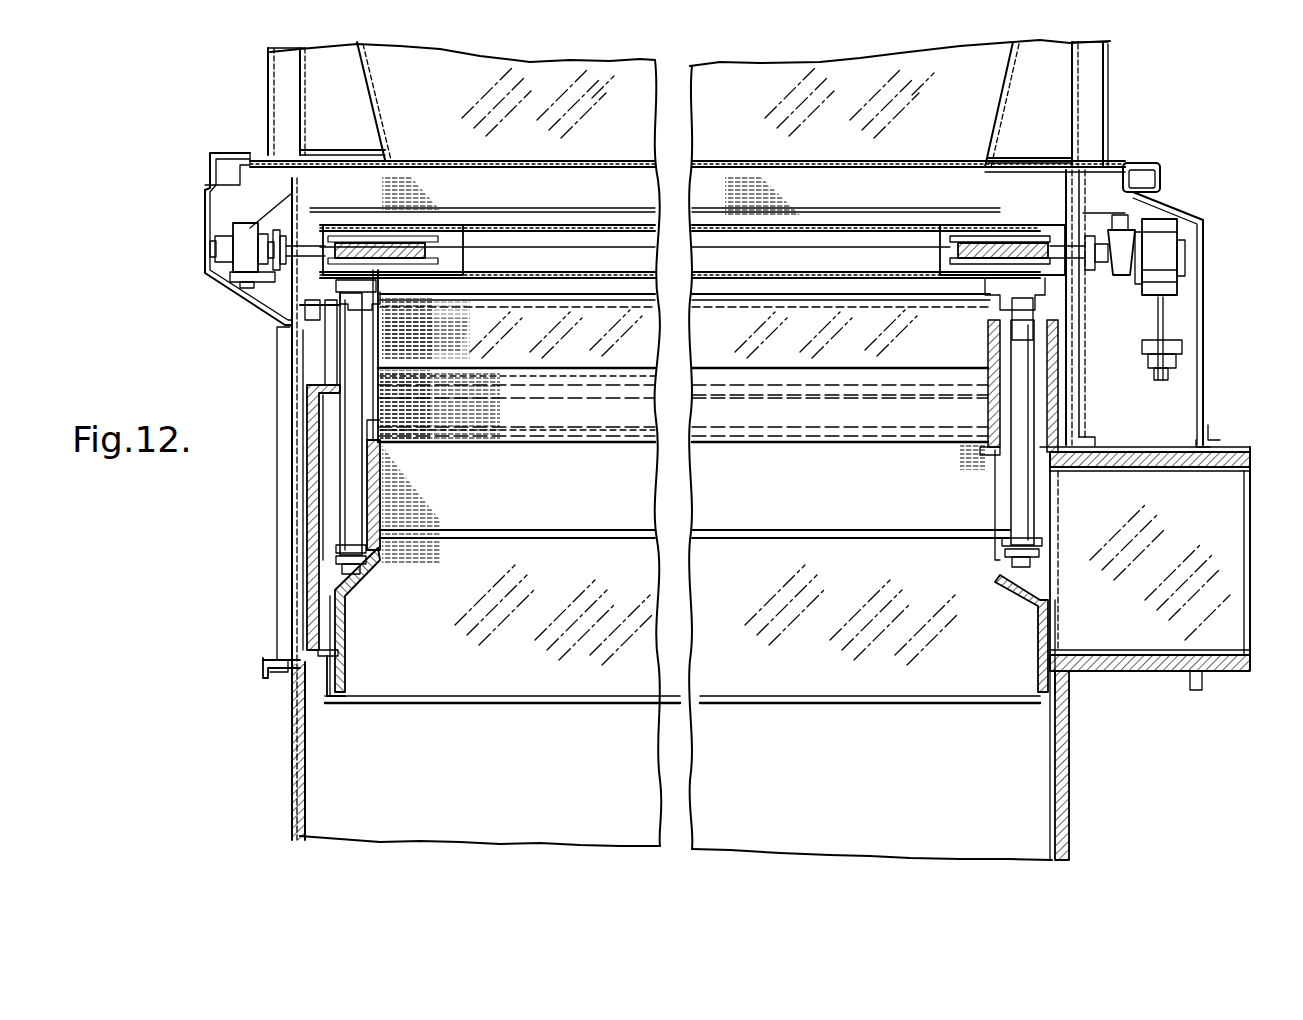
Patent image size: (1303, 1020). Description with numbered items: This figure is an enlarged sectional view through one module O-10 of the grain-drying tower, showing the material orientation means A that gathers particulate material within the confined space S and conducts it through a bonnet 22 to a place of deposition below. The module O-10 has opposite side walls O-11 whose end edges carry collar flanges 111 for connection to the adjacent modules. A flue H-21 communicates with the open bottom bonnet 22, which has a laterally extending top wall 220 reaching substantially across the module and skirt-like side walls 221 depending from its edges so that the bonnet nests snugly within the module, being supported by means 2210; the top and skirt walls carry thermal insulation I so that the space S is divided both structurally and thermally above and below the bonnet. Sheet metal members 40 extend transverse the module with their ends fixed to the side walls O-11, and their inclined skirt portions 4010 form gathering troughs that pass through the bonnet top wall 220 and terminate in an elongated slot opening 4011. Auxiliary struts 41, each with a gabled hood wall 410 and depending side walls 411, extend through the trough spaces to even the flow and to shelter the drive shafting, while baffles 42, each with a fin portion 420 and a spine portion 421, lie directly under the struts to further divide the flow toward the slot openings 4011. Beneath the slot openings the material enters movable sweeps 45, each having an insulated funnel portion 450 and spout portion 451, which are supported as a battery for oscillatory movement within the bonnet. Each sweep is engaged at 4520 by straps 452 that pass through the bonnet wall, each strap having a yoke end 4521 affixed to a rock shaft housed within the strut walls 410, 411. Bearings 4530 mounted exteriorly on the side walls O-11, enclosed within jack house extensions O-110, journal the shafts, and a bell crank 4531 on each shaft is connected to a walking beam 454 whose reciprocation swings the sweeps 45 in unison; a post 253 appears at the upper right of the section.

The assembly A is at (200, 148).
The confined space S is at (362, 797).
The thermal insulation I is at (318, 590).
The module O-10 is at (262, 468).
The module side walls O-11 is at (300, 628).
The jack house extensions O-110 is at (204, 205).
The flue H-21 is at (1125, 622).
The bonnet 22 is at (332, 415).
The top wall 220 is at (322, 384).
The skirt-like side walls 221 is at (312, 553).
The supporting means 2210 is at (322, 669).
The collar flanges 111 is at (262, 664).
The post 253 is at (838, 258).
The members 40 is at (800, 412).
The skirt portions 4010 is at (725, 408).
The slot opening 4011 is at (448, 444).
The auxiliary struts 41 is at (548, 166).
The gabled top or hood wall 410 is at (568, 188).
The side walls 411 is at (700, 228).
The baffles 42 is at (485, 352).
The fin portion 420 is at (540, 352).
The spine portion 421 is at (600, 352).
The movable sweeps 45 is at (466, 660).
The chute box or funnel portion 450 is at (870, 517).
The spout portion 451 is at (564, 677).
The straps 452 is at (352, 470).
The sweep engagement 4520 is at (360, 568).
The yoke end 4521 is at (376, 302).
The bearings 4530 is at (246, 250).
The bell crank 4531 is at (1166, 310).
The walking beam 454 is at (1176, 358).